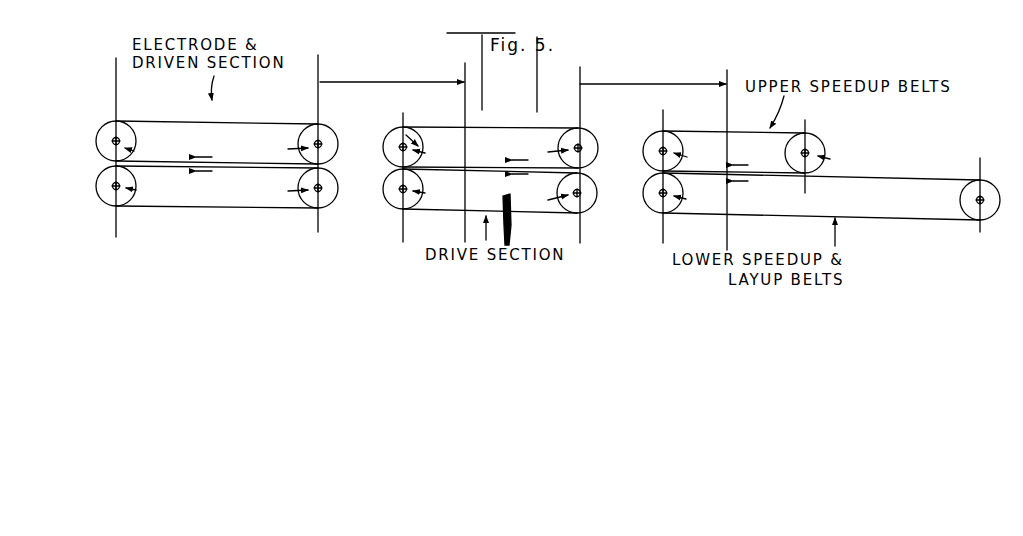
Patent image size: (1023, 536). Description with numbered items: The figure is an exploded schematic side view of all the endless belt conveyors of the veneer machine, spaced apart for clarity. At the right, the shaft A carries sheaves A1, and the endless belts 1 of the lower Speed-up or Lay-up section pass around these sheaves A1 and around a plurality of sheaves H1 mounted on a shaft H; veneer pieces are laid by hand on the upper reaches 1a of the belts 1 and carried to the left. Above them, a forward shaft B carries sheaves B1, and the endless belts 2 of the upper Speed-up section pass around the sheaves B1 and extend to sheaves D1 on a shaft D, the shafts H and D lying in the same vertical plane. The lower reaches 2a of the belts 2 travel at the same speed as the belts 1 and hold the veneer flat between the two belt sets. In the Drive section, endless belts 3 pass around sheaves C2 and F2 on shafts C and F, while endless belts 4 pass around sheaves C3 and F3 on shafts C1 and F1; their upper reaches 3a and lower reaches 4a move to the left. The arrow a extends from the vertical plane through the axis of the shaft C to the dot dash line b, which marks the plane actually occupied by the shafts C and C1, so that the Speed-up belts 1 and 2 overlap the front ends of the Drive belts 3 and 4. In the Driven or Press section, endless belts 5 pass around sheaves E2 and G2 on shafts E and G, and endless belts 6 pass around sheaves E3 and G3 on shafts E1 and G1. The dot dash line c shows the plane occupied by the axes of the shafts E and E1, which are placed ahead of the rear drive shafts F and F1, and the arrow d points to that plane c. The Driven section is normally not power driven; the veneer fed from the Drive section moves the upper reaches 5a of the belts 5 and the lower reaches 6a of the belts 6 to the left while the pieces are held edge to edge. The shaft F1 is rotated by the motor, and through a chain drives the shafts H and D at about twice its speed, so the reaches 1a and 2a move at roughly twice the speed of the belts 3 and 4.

The endless belts 1 is at (941, 220).
The upper reaches of endless belts 1 1a is at (901, 177).
The endless belts 2 is at (712, 131).
The lower reaches of endless belts 2 2a is at (763, 172).
The endless belts 3 is at (551, 213).
The upper reaches of endless belts 3 3a is at (490, 174).
The endless belts 4 is at (494, 127).
The lower reaches of endless belts 4 4a is at (505, 168).
The endless belts 5 is at (238, 207).
The upper reaches of endless belts 5 5a is at (236, 168).
The endless belts 6 is at (182, 122).
The lower reaches of endless belts 6 6a is at (232, 164).
The shaft A is at (985, 194).
The sheaves A1 is at (972, 201).
The forward shaft B is at (811, 149).
The sheaves B1 is at (837, 156).
The shaft C is at (583, 204).
The shaft C1 is at (583, 143).
The sheaves C2 is at (562, 193).
The sheaves C3 is at (547, 146).
The shaft D is at (659, 147).
The sheaves D1 is at (695, 151).
The shaft E is at (326, 199).
The shaft E1 is at (322, 139).
The sheaves E2 is at (301, 188).
The sheaves E3 is at (286, 147).
The rear drive shaft F is at (396, 200).
The rear drive shaft F1 is at (400, 142).
The sheaves F2 is at (416, 189).
The sheaves F3 is at (427, 147).
The shaft G is at (109, 196).
The shaft G1 is at (112, 136).
The sheaves G2 is at (136, 190).
The sheaves G3 is at (134, 151).
The shaft H is at (659, 201).
The sheaves H1 is at (695, 193).
The arrow a is at (668, 86).
The dot dash line b is at (727, 231).
The dot dash line c is at (463, 226).
The arrow d is at (410, 84).